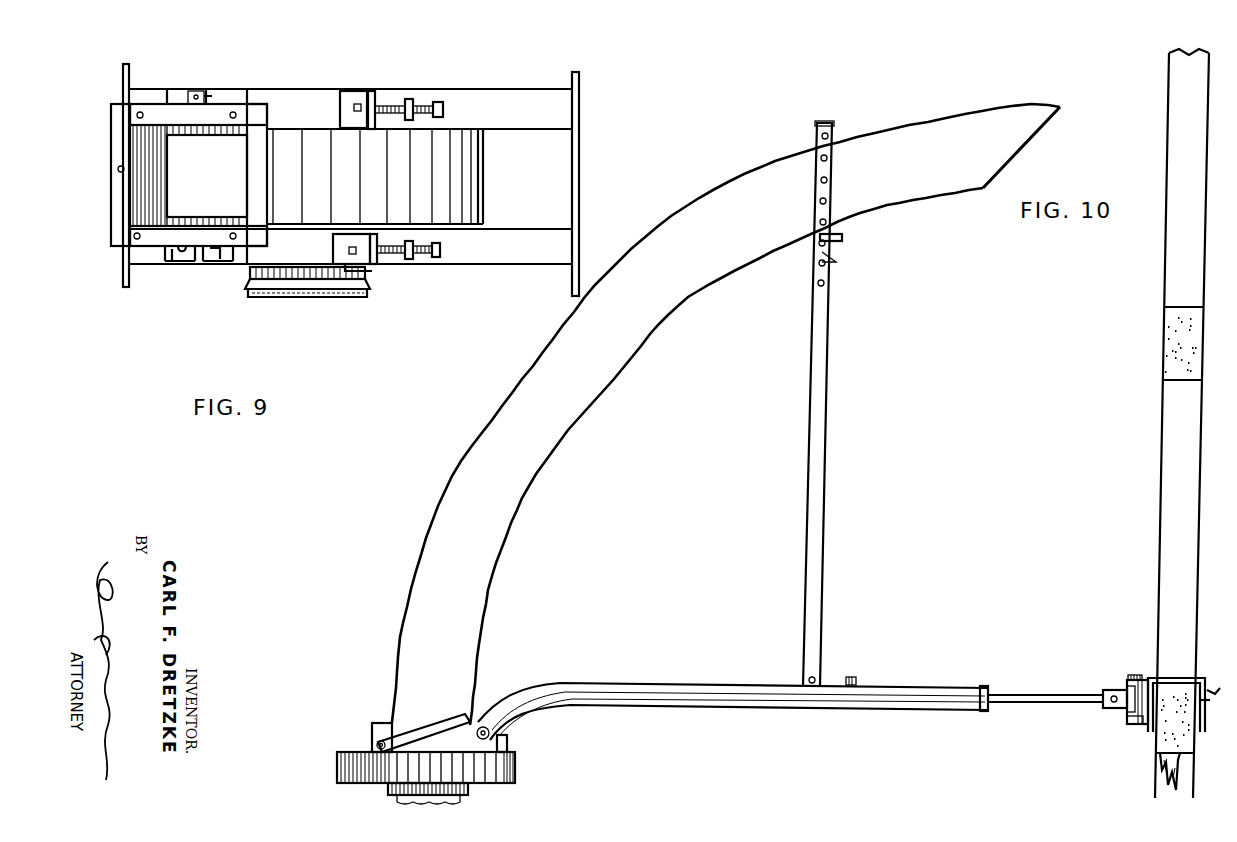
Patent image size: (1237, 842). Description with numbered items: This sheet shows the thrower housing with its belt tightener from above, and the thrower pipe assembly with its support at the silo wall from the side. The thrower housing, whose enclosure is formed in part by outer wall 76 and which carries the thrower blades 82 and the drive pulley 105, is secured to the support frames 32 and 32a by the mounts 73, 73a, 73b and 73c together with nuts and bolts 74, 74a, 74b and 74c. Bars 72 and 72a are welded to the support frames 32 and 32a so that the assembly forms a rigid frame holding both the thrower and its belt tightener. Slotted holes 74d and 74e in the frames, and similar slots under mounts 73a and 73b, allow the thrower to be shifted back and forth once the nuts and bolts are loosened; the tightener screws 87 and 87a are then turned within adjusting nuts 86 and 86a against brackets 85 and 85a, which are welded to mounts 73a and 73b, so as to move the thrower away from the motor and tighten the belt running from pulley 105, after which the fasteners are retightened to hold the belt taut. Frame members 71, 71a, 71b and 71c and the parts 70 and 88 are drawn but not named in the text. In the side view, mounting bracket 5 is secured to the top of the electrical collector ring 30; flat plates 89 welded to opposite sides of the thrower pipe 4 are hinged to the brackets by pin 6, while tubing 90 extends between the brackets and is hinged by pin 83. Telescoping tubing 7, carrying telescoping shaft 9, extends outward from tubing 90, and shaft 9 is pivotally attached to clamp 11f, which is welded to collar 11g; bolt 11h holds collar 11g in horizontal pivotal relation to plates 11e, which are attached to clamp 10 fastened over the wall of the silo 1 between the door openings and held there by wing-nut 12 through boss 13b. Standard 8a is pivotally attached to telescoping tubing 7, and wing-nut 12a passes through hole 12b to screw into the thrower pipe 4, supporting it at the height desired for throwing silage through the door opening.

In FIG. 10, the silo 1 is at (1160, 350).
In FIG. 10, the thrower pipe 4 is at (612, 388).
In FIG. 10, the mounting bracket 5 is at (372, 735).
In FIG. 10, the pin 6 is at (378, 745).
In FIG. 10, the telescoping tubing 7 is at (935, 688).
In FIG. 10, the standard 8a is at (818, 410).
In FIG. 10, the telescoping shaft 9 is at (1060, 702).
In FIG. 10, the clamp 10 is at (1150, 690).
In FIG. 10, the plates 11e is at (1140, 680).
In FIG. 10, the clamp 11f is at (1112, 694).
In FIG. 10, the collar 11g is at (1130, 690).
In FIG. 10, the bolt 11h is at (1130, 718).
In FIG. 10, the wing-nut 12 is at (1215, 700).
In FIG. 10, the wing-nut 12a is at (832, 238).
In FIG. 10, the hole 12b is at (824, 256).
In FIG. 10, the boss 13b is at (1207, 690).
In FIG. 10, the electrical collector ring 30 is at (337, 765).
In FIG. 9, the support frame 32 is at (540, 92).
In FIG. 9, the support frame 32a is at (513, 228).
In FIG. 10, the pinion 70 is at (468, 790).
In FIG. 9, the frame 71 is at (118, 205).
In FIG. 9, the frame top plate 71a is at (145, 105).
In FIG. 9, the frame upright 71b is at (258, 108).
In FIG. 9, the frame foot 71c is at (245, 266).
In FIG. 9, the bar 72 is at (125, 290).
In FIG. 9, the bar 72a is at (578, 135).
In FIG. 9, the mount 73 is at (190, 97).
In FIG. 9, the mount 73a is at (352, 92).
In FIG. 9, the mount 73b is at (360, 268).
In FIG. 9, the mount 73c is at (182, 266).
In FIG. 9, the nuts and bolts 74 is at (200, 100).
In FIG. 9, the nuts and bolts 74a is at (340, 250).
In FIG. 9, the nuts and bolts 74b is at (354, 108).
In FIG. 9, the nuts and bolts 74c is at (165, 255).
In FIG. 9, the slotted hole 74d is at (210, 262).
In FIG. 9, the slotted hole 74e is at (222, 104).
In FIG. 9, the outer wall 76 is at (490, 175).
In FIG. 9, the thrower blades 82 is at (207, 175).
In FIG. 10, the pin 83 is at (505, 742).
In FIG. 9, the bracket 85 is at (372, 92).
In FIG. 9, the bracket 85a is at (378, 265).
In FIG. 9, the adjusting nut 86 is at (412, 100).
In FIG. 9, the adjusting nut 86a is at (410, 262).
In FIG. 9, the tightener screw 87 is at (445, 105).
In FIG. 9, the tightener screw 87a is at (436, 258).
In FIG. 10, the splintered pole end 88 is at (1165, 780).
In FIG. 10, the flat plates 89 is at (460, 718).
In FIG. 10, the tubing 90 is at (483, 728).
In FIG. 9, the pulley 105 is at (290, 300).